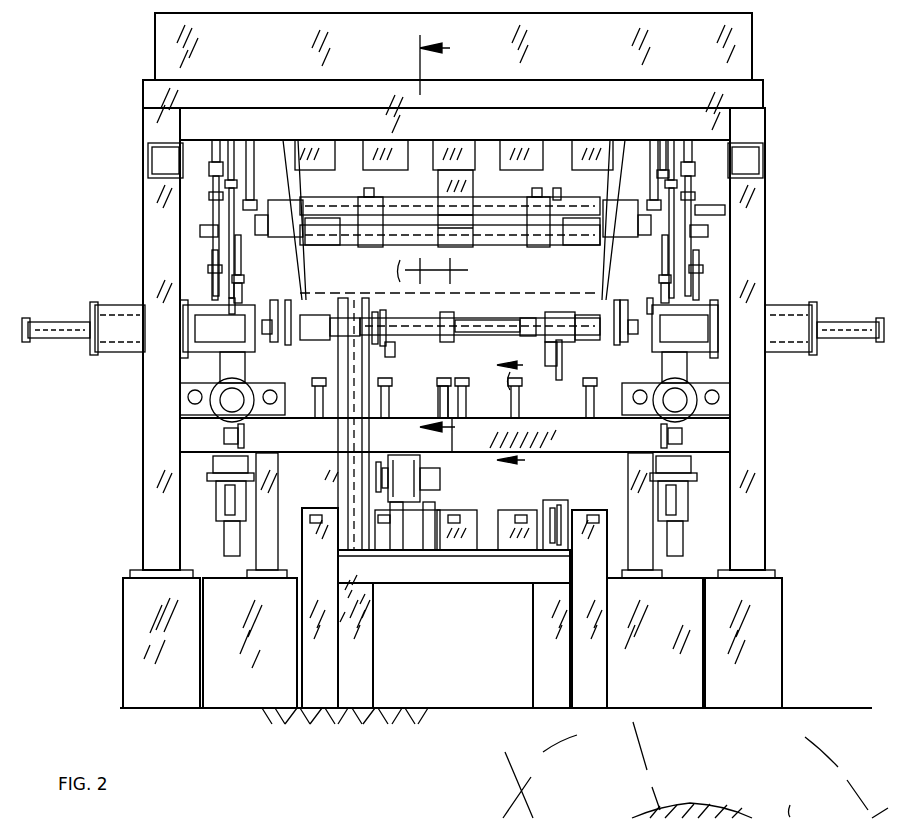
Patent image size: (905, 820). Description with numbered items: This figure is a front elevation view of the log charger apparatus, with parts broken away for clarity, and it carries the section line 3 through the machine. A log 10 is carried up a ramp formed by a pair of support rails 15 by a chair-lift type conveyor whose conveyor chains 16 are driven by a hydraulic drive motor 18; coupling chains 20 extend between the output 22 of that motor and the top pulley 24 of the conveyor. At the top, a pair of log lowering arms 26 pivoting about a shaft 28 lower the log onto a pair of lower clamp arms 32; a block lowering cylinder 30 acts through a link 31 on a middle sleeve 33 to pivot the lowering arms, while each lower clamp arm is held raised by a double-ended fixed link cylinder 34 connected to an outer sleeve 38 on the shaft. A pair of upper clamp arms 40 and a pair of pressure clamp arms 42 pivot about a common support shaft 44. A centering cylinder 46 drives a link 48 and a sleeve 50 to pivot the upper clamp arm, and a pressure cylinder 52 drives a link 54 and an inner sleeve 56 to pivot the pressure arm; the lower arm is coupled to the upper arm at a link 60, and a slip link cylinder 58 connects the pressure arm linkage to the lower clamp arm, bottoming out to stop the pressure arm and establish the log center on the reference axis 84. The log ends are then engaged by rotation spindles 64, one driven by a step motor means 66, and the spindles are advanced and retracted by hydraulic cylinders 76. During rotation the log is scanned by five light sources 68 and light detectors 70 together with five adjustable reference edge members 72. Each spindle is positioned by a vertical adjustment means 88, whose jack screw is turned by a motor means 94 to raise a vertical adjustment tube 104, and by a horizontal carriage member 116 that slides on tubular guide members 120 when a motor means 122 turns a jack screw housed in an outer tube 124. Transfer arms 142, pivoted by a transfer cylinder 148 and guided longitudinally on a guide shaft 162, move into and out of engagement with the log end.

The section line 3- 3 is at (443, 240).
The log 10 is at (595, 529).
The support rails 15 is at (338, 430).
The conveyor chains 16 is at (345, 464).
The hydraulic drive motor 18 is at (440, 478).
The coupling chains 20 is at (385, 428).
The output 22 is at (378, 478).
The top pulley 24 is at (390, 310).
The log lowering arms 26 is at (495, 318).
The shaft 28 is at (545, 312).
The block lowering cylinder 30 is at (438, 400).
The link 31 is at (452, 313).
The lower clamp arms 32 is at (560, 362).
The middle sleeve 33 is at (488, 318).
The fixed link cylinder 34 is at (232, 292).
The outer sleeve 38 is at (312, 305).
The upper clamp arms 40 is at (335, 248).
The pressure clamp arms 42 is at (380, 232).
The common support shaft 44 is at (500, 237).
The centering cylinder 46 is at (216, 160).
The link 48 is at (234, 160).
The sleeve 50 is at (232, 245).
The pressure cylinder 52 is at (190, 175).
The link 54 is at (722, 208).
The inner sleeve 56 is at (205, 228).
The slip link cylinder 58 is at (210, 277).
The link 60 is at (662, 160).
The rotation spindles 64 is at (268, 334).
The motor means 66 is at (112, 305).
The light sources 68 is at (370, 155).
The light detectors 70 is at (316, 523).
The adjustable reference edge members 72 is at (320, 386).
The hydraulic cylinders 76 is at (45, 325).
The reference axis 84 is at (690, 806).
The vertical adjustment means 88 is at (215, 462).
The motor means 94 is at (226, 540).
The vertical adjustment tube 104 is at (222, 372).
The horizontal carriage member 116 is at (192, 383).
The tubular guide members 120 is at (190, 397).
The motor means 122 is at (232, 402).
The outer tube 124 is at (232, 412).
The transfer arms 142 is at (295, 240).
The transfer cylinder 148 is at (258, 152).
The guide shaft 162 is at (486, 215).